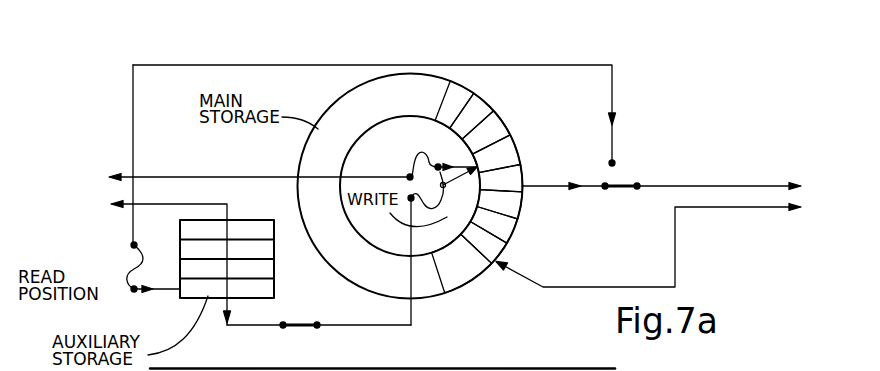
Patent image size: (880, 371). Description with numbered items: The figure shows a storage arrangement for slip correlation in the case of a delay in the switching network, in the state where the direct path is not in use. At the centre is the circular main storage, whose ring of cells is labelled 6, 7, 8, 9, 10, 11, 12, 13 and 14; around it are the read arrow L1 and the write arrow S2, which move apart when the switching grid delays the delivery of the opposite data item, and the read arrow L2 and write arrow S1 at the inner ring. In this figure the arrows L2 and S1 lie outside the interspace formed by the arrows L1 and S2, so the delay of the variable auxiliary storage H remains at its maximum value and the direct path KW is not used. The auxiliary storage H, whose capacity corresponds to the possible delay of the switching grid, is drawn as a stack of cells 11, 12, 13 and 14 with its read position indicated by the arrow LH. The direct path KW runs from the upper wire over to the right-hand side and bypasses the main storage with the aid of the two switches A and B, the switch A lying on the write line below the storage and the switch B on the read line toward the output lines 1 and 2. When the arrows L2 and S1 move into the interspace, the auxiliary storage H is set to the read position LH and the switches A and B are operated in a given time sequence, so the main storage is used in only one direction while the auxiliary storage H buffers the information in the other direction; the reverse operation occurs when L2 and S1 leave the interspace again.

The output line 1 is at (456, 250).
The output line 2 is at (455, 227).
The main storage cell 6 is at (462, 263).
The main storage cell 7 is at (484, 243).
The main storage cell 8 is at (493, 225).
The main storage cell 9 is at (499, 204).
The main storage cell 10 is at (501, 178).
The main storage cell 11 is at (496, 154).
The main storage cell 12 is at (486, 133).
The main storage cell 13 is at (472, 116).
The main storage cell 14 is at (454, 104).
The switch A is at (319, 337).
The switch B is at (621, 197).
The variable auxiliary storage H is at (274, 270).
The read position arrow LH is at (170, 290).
The direct path KW is at (614, 90).
The write arrow S1 is at (460, 176).
The write arrow S2 is at (501, 296).
The read arrow L1 is at (556, 161).
The read arrow L2 is at (455, 163).